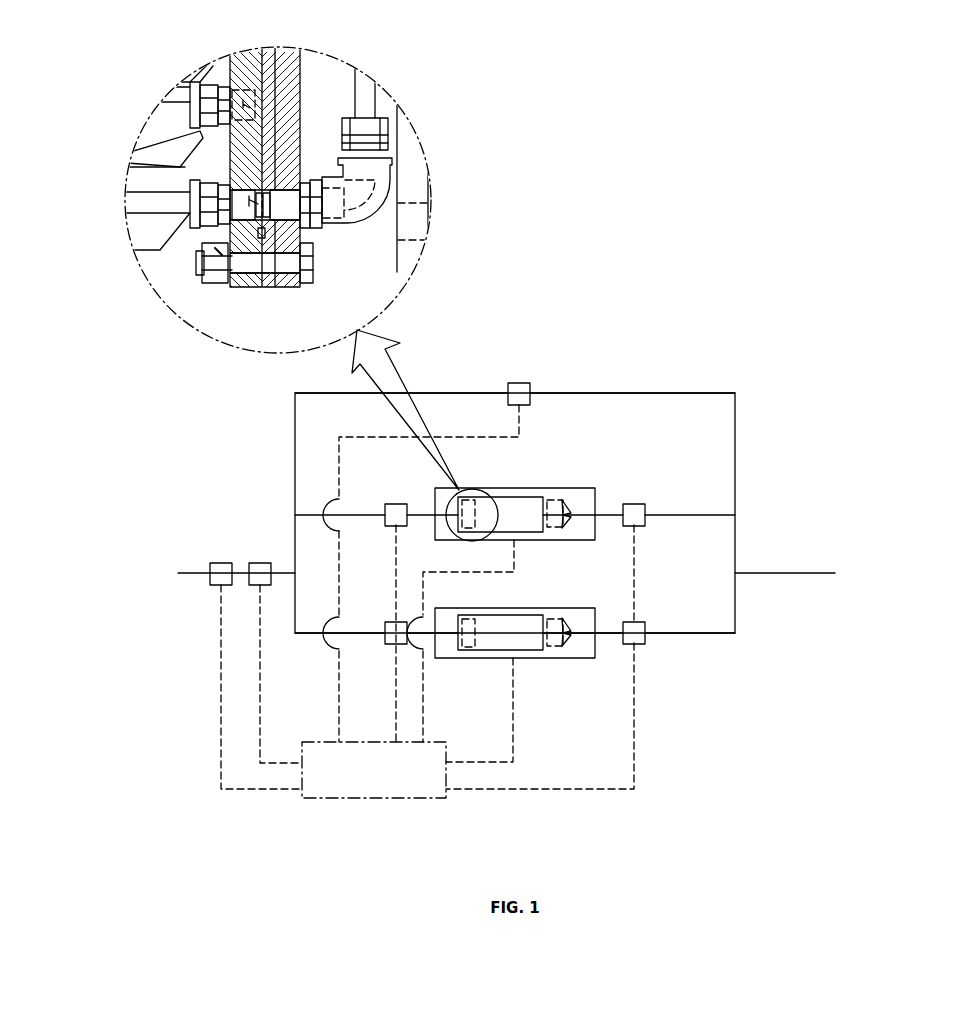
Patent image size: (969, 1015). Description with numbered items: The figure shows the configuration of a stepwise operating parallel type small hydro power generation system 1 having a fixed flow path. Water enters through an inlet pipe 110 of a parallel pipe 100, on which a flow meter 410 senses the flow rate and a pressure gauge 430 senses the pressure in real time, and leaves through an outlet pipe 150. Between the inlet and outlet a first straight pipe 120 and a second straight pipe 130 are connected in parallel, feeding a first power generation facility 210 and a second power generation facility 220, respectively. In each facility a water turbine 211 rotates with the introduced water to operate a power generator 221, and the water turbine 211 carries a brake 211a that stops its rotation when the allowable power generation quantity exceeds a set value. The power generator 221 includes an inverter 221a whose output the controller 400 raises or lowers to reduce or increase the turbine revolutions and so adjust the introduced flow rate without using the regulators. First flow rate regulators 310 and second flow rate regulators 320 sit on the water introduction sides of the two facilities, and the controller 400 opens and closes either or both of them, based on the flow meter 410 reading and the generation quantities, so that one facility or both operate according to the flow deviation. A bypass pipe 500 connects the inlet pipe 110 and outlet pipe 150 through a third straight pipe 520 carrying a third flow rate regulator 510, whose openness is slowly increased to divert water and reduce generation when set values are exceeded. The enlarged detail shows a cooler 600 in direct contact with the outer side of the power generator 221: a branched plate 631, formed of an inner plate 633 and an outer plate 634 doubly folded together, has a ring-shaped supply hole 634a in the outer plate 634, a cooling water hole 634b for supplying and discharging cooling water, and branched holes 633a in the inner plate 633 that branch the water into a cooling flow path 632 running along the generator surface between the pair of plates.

The stepwise operating parallel type small hydro power generation system 1 is at (507, 289).
The parallel pipe 100 is at (726, 646).
The inlet pipe 110 is at (186, 577).
The first straight pipe 120 is at (688, 634).
The second straight pipe 130 is at (691, 515).
The outlet pipe 150 is at (791, 573).
The first power generation facility 210 is at (560, 659).
The water turbine 211 is at (565, 500).
The brake 211a is at (552, 500).
The second power generation facility 220 is at (597, 528).
The power generator 221 is at (501, 497).
The inverter 221a is at (468, 500).
The first flow rate regulator 310 is at (394, 622).
The second flow rate regulator 320 is at (396, 504).
The controller 400 is at (373, 800).
The flow meter 410 is at (222, 563).
The pressure gauge 430 is at (260, 563).
The bypass pipe 500 is at (553, 318).
The third flow rate regulator 510 is at (520, 383).
The third straight pipe 520 is at (634, 393).
The cooler 600 is at (367, 308).
The branched plate 631 is at (265, 383).
The cooling flow path 632 is at (163, 200).
The inner plate 633 is at (245, 284).
The branched hole 633a is at (250, 204).
The outer plate 634 is at (280, 284).
The supply hole 634a is at (308, 287).
The cooling water hole 634b is at (303, 198).